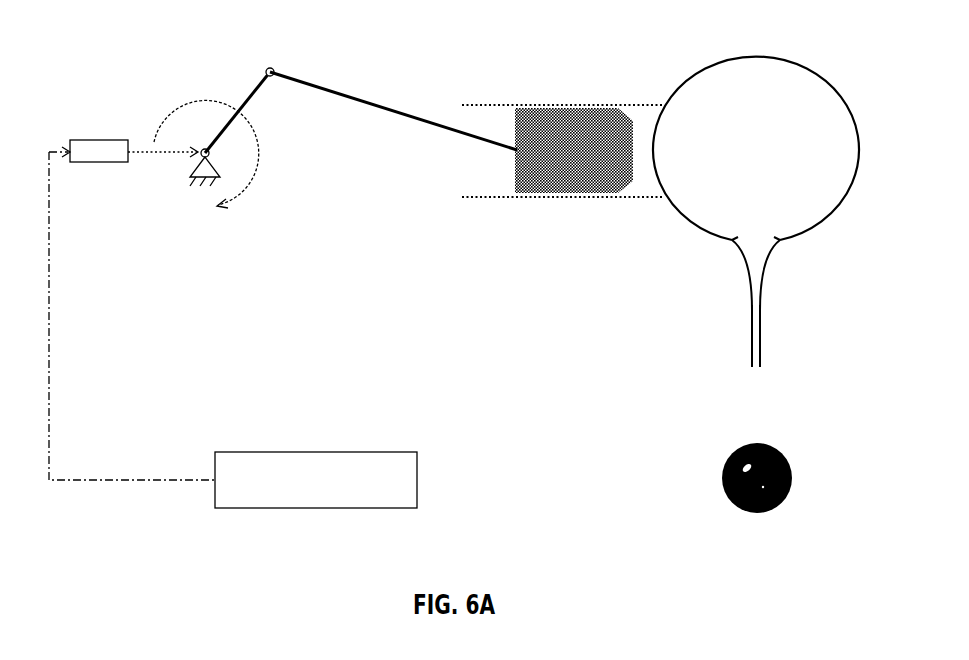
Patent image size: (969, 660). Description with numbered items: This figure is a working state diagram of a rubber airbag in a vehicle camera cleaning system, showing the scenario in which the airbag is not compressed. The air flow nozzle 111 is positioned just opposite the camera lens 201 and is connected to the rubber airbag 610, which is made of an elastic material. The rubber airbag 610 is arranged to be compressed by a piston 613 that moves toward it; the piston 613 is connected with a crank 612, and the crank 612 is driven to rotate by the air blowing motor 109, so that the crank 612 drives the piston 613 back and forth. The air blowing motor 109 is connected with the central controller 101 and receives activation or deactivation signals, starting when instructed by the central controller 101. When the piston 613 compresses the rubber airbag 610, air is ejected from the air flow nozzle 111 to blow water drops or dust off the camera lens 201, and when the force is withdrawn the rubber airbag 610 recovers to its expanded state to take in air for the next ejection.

The air blowing motor 109 is at (90, 162).
The crank 612 is at (253, 97).
The piston 613 is at (548, 177).
The rubber airbag 610 is at (712, 197).
The air flow nozzle 111 is at (757, 346).
The central controller 101 is at (323, 462).
The camera lens 201 is at (718, 470).